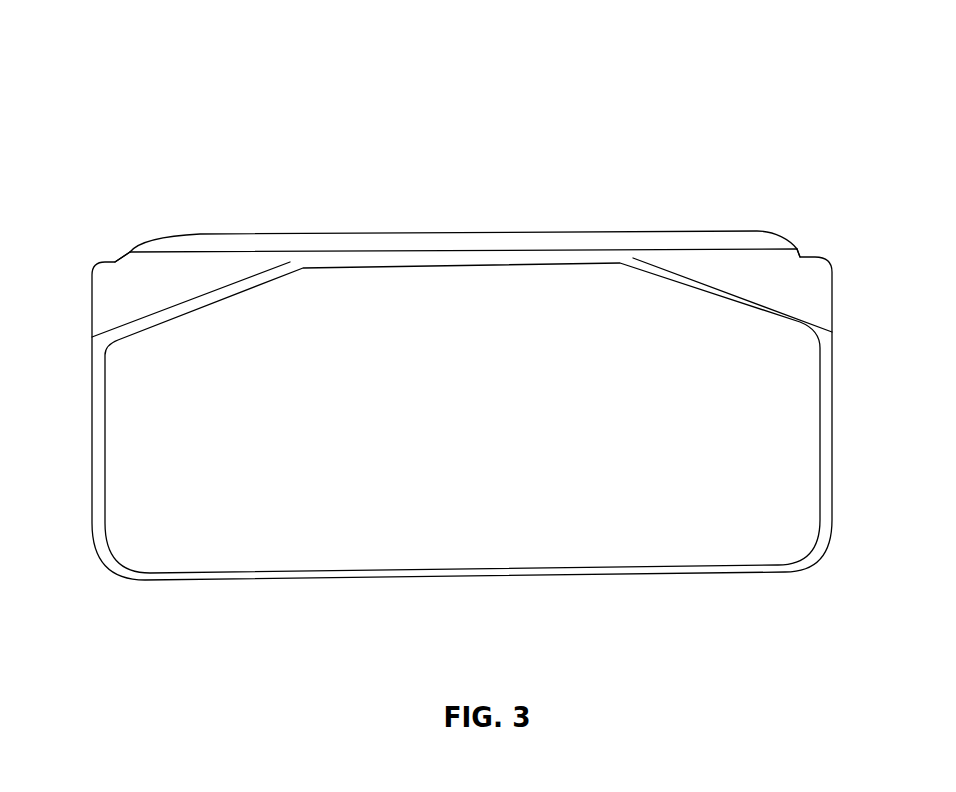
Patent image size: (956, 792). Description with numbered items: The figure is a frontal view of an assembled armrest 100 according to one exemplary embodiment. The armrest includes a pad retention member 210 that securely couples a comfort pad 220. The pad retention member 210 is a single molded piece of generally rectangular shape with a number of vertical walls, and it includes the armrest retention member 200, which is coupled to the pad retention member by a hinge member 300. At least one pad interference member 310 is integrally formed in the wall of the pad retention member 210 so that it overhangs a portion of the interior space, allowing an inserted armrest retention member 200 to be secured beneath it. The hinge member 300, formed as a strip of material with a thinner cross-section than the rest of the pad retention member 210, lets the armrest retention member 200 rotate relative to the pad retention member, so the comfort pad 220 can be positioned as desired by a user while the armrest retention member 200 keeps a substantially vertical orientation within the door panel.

The armrest 100 is at (450, 82).
The armrest retention member 200 is at (677, 231).
The pad retention member 210 is at (140, 582).
The comfort pad 220 is at (429, 431).
The hinge member 300 is at (128, 252).
The pad interference member 310 is at (121, 303).